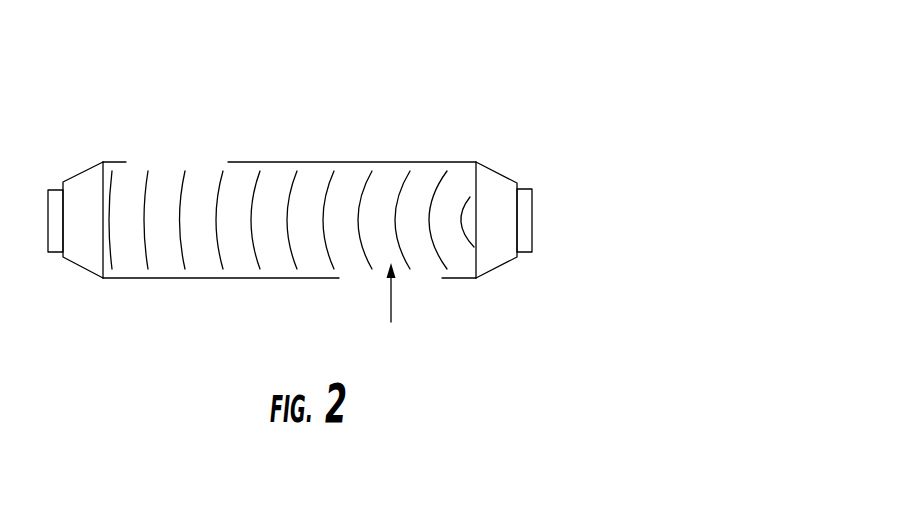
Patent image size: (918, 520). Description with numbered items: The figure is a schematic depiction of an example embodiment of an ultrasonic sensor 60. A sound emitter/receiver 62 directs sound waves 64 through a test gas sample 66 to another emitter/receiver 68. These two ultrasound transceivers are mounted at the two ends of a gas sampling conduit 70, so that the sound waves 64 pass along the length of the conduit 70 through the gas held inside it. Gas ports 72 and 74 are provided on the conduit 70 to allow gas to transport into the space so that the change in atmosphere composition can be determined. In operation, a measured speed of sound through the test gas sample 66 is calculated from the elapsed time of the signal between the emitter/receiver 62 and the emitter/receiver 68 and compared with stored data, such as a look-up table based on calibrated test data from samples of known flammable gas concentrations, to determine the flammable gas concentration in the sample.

The ultrasonic sensor 60 is at (497, 47).
The sound emitter/receiver 62 is at (468, 200).
The sound waves 64 is at (331, 186).
The test gas sample 66 is at (391, 292).
The emitter/receiver 68 is at (102, 175).
The gas sampling conduit 70 is at (270, 162).
The gas port 72 is at (353, 275).
The gas port 74 is at (200, 162).